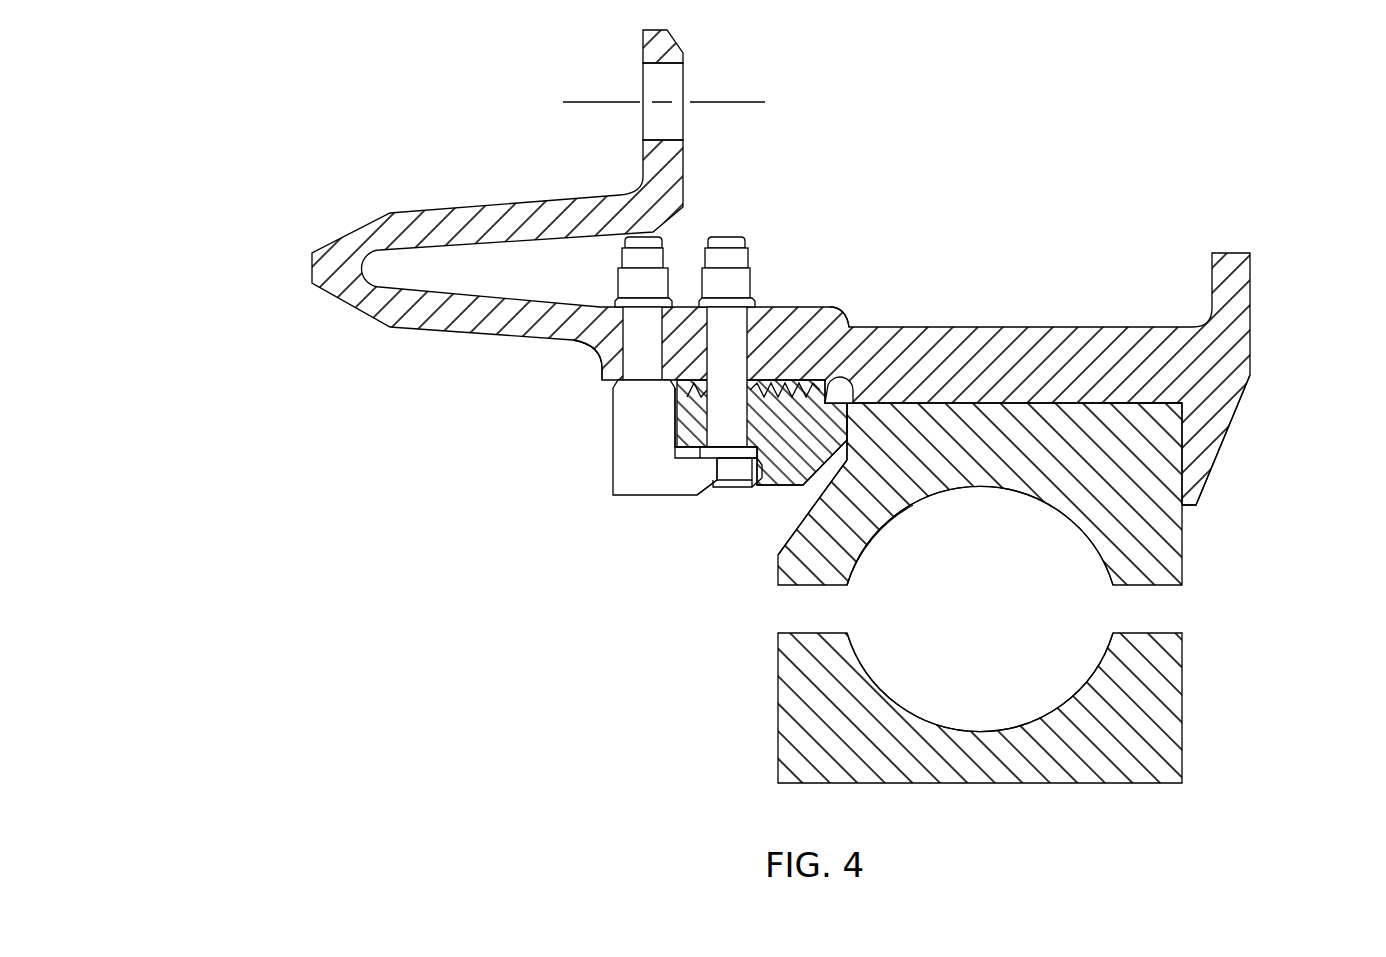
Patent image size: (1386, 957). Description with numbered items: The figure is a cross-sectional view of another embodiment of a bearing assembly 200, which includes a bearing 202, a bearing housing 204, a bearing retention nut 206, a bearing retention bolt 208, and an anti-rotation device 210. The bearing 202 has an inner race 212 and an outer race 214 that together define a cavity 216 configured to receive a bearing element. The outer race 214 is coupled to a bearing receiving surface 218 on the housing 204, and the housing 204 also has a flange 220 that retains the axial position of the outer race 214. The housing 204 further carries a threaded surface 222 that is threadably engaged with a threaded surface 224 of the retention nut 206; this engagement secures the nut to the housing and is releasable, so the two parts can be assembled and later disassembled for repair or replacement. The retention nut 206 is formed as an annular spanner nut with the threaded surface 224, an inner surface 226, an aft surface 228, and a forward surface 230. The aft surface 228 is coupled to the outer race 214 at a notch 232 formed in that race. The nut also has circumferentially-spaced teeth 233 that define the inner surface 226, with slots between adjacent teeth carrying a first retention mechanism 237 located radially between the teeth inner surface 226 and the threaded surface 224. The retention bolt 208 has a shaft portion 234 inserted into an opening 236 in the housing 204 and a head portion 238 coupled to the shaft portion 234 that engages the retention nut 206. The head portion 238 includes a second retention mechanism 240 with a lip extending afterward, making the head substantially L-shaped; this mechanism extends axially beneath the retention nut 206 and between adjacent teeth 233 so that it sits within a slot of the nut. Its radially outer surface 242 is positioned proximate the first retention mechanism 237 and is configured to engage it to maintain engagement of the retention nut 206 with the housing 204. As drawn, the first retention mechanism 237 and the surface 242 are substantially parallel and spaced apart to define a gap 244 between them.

The bearing assembly 200 is at (769, 406).
The bearing 202 is at (1030, 580).
The bearing housing 204 is at (805, 267).
The bearing retention nut 206 is at (766, 415).
The bearing retention bolt 208 is at (645, 399).
The anti-rotation device 210 is at (752, 257).
The inner race 212 is at (1157, 733).
The outer race 214 is at (978, 485).
The cavity 216 is at (1060, 626).
The bearing receiving surface 218 is at (1088, 405).
The flange 220 is at (1215, 440).
The threaded surface 222 is at (770, 383).
The threaded surface 224 is at (802, 387).
The inner surface 226 is at (797, 468).
The aft surface 228 is at (850, 438).
The forward surface 230 is at (672, 425).
The notch 232 is at (883, 525).
The teeth 233 is at (790, 505).
The shaft portion 234 is at (634, 325).
The opening 236 is at (602, 368).
The first retention mechanism 237 is at (768, 465).
The head portion 238 is at (632, 455).
The second retention mechanism 240 is at (693, 478).
The radially outer surface 242 is at (683, 458).
The gap 244 is at (668, 455).